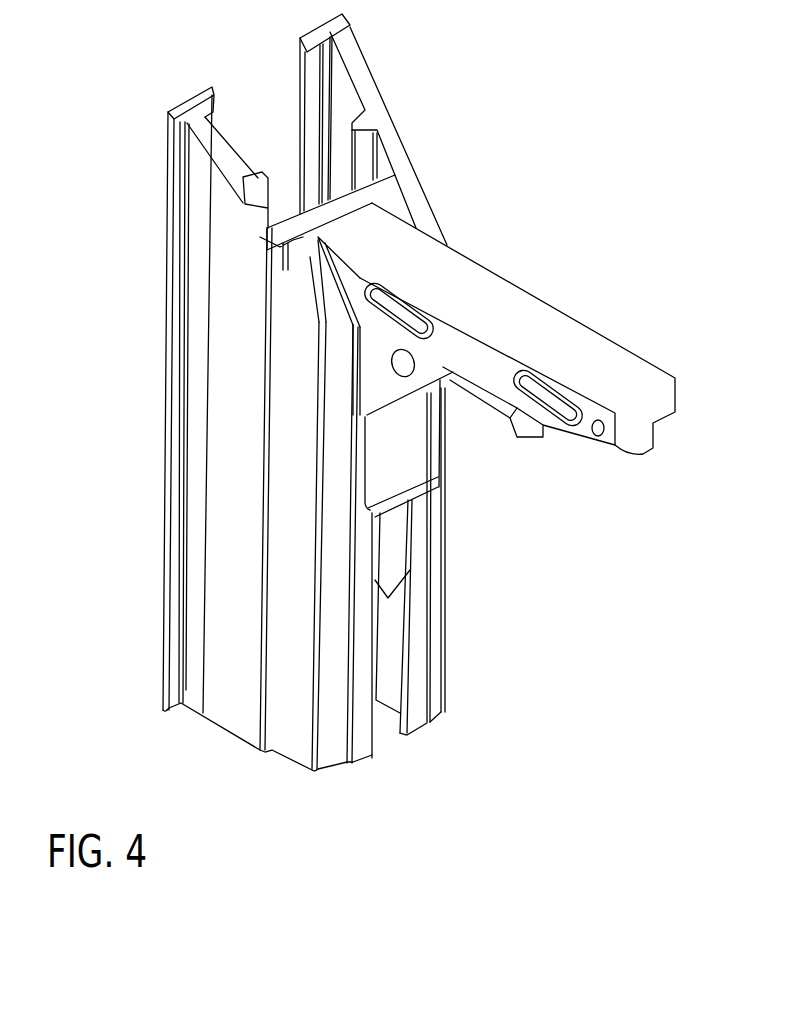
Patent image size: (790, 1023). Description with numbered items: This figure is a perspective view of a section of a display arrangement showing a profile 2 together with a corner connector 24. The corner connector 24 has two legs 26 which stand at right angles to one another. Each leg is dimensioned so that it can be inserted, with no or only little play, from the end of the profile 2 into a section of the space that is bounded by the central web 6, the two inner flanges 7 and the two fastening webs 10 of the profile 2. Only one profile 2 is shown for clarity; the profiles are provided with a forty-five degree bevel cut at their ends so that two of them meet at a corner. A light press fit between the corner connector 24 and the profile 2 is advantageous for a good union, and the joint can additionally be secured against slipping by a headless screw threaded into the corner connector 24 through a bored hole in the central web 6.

The profile 2 is at (215, 528).
The central web 6 is at (337, 210).
The inner flanges 7 is at (323, 262).
The fastening webs 10 is at (417, 635).
The corner connector 24 is at (587, 333).
The legs 26 is at (413, 552).